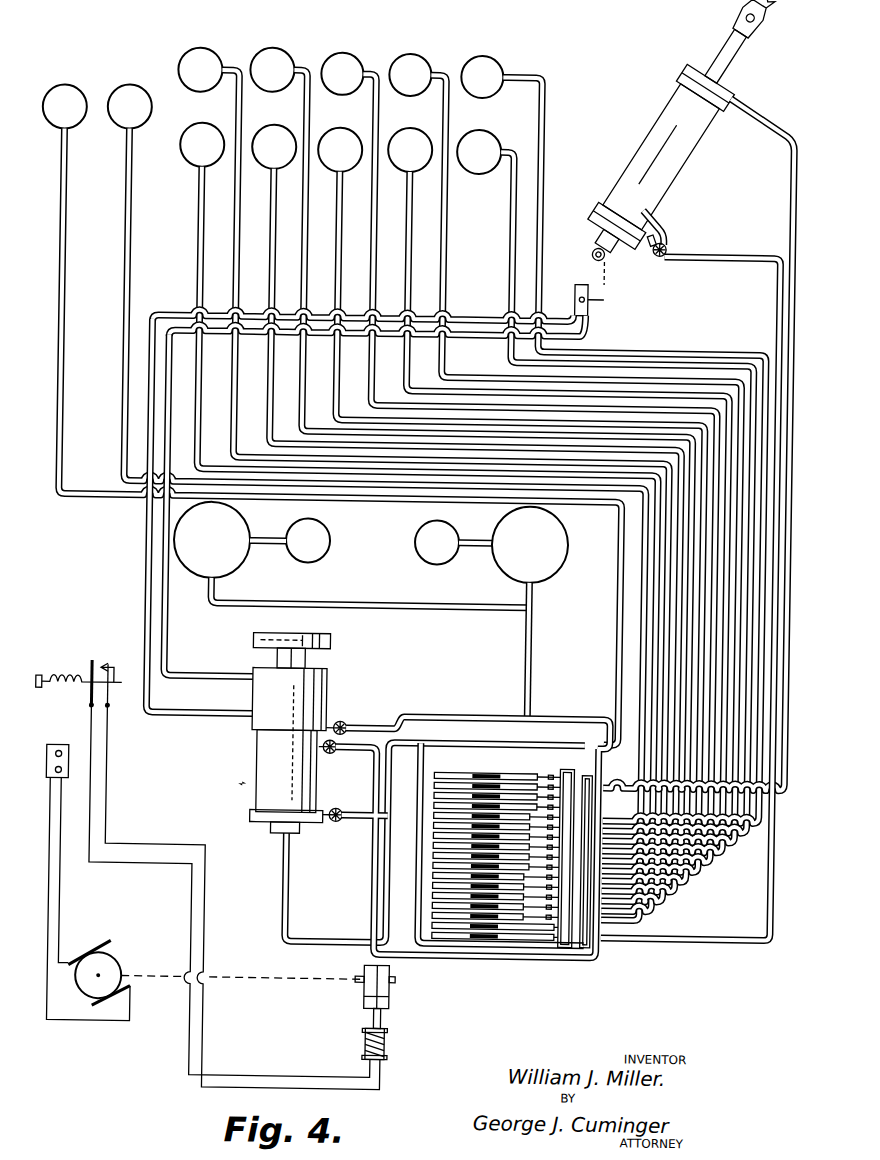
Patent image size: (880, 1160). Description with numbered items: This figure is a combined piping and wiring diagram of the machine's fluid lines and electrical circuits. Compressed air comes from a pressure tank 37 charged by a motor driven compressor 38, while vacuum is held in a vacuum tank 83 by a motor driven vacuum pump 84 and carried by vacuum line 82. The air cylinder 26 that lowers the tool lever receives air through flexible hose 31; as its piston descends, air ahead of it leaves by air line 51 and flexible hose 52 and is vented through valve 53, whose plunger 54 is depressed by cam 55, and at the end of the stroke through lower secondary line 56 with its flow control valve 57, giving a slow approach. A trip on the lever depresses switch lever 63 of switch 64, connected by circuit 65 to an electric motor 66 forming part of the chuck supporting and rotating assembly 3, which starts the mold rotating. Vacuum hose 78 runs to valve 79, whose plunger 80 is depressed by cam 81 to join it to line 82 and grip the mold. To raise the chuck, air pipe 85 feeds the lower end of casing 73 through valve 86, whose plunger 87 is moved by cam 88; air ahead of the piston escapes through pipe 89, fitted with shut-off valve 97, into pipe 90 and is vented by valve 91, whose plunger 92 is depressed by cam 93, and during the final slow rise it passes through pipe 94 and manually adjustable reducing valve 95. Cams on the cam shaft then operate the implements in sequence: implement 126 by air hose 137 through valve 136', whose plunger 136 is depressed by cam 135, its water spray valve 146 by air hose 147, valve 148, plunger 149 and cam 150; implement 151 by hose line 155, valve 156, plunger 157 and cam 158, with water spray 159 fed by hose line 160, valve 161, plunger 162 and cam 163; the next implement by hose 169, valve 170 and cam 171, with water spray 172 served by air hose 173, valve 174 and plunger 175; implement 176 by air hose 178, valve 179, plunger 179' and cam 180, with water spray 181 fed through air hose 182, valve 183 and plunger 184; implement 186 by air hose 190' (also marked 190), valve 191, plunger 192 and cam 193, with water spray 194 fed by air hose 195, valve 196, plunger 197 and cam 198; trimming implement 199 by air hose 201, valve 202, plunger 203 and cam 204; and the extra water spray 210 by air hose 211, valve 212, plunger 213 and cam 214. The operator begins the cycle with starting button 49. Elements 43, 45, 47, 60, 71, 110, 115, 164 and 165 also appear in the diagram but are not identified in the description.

The chuck supporting and rotating assembly 3 is at (222, 771).
The air cylinder 26 is at (645, 125).
The flexible hose 31 is at (740, 110).
The pressure tank 37 is at (556, 566).
The motor driven compressor 38 is at (460, 567).
The solenoid valve 43 is at (367, 992).
The cam 45 is at (118, 962).
The solenoid 47 is at (369, 1046).
The starting button 49 is at (36, 683).
The air line 51 is at (660, 228).
The flexible hose 52 is at (712, 255).
The valve 53 is at (566, 740).
The valve operating plunger 54 is at (545, 786).
The cam 55 is at (348, 736).
The lower secondary line 56 is at (641, 247).
The flow control valve 57 is at (654, 256).
The control cylinder 60 is at (251, 641).
The switch lever 63 is at (590, 305).
The switch 64 is at (567, 290).
The circuit 65 is at (141, 585).
The electric motor 66 is at (251, 704).
The electric wires 71 is at (235, 897).
The cylinder casing 73 is at (256, 813).
The vacuum hose 78 is at (598, 716).
The valve 79 is at (562, 760).
The valve operating plunger 80 is at (540, 826).
The cam 81 is at (436, 815).
The vacuum line 82 is at (368, 604).
The vacuum tank 83 is at (240, 575).
The motor driven vacuum pump 84 is at (320, 562).
The air pipe 85 is at (578, 746).
The valve 86 is at (548, 772).
The plunger 87 is at (540, 836).
The cam 88 is at (436, 825).
The pipe 89 is at (335, 760).
The pipe 90 is at (530, 625).
The valve 91 is at (560, 960).
The plunger 92 is at (560, 946).
The cam 93 is at (450, 918).
The pipe 94 is at (328, 748).
The manually adjustable reducing valve 95 is at (338, 728).
The shut-off valve 97 is at (324, 752).
The port 110 is at (520, 950).
The port 115 is at (530, 950).
The implement 126 is at (186, 54).
The cam 135 is at (436, 915).
The plunger 136 is at (499, 971).
The valve 136' is at (602, 969).
The air hose 137 is at (225, 210).
The air actuated valve 146 is at (188, 130).
The air hose 147 is at (189, 238).
The valve 148 is at (584, 952).
The plunger 149 is at (550, 948).
The cam 150 is at (436, 925).
The implement 151 is at (260, 53).
The hose line 155 is at (293, 210).
The valve 156 is at (605, 950).
The plunger 157 is at (540, 950).
The cam 158 is at (436, 895).
The water spray 159 is at (260, 131).
The hose line 160 is at (261, 237).
The valve 161 is at (596, 958).
The plunger 162 is at (556, 948).
The cam 163 is at (436, 905).
The gauge 164 is at (331, 57).
The valve 165 is at (436, 865).
The hose 169 is at (362, 208).
The valve 170 is at (612, 938).
The cam 171 is at (436, 875).
The water spray 172 is at (328, 132).
The air hose 173 is at (327, 236).
The valve 174 is at (610, 944).
The plunger 175 is at (436, 885).
The implement 176 is at (399, 57).
The air hose 178 is at (432, 206).
The valve 179 is at (512, 738).
The plunger 179' is at (392, 720).
The cam 180 is at (436, 855).
The water spray 181 is at (400, 131).
The air hose 182 is at (397, 234).
The valve 183 is at (550, 816).
The plunger 184 is at (440, 790).
The implement 186 is at (471, 58).
The air hose 190 is at (759, 831).
The air hose 190' is at (556, 191).
The valve 191 is at (552, 778).
The plunger 192 is at (480, 800).
The cam 193 is at (436, 835).
The water spray 194 is at (469, 132).
The air hose 195 is at (501, 232).
The valve 196 is at (553, 800).
The plunger 197 is at (460, 790).
The cam 198 is at (436, 845).
The trimming implement 199 is at (50, 94).
The air hose 201 is at (58, 194).
The valve 202 is at (565, 720).
The plunger 203 is at (548, 794).
The cam 204 is at (448, 800).
The extra water spray 210 is at (115, 93).
The air hose 211 is at (116, 219).
The valve 212 is at (572, 950).
The plunger 213 is at (566, 950).
The cam 214 is at (436, 935).